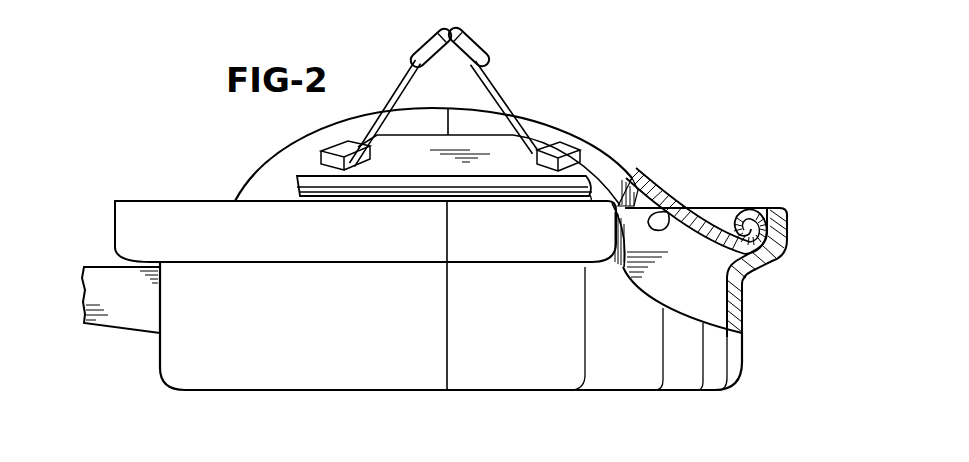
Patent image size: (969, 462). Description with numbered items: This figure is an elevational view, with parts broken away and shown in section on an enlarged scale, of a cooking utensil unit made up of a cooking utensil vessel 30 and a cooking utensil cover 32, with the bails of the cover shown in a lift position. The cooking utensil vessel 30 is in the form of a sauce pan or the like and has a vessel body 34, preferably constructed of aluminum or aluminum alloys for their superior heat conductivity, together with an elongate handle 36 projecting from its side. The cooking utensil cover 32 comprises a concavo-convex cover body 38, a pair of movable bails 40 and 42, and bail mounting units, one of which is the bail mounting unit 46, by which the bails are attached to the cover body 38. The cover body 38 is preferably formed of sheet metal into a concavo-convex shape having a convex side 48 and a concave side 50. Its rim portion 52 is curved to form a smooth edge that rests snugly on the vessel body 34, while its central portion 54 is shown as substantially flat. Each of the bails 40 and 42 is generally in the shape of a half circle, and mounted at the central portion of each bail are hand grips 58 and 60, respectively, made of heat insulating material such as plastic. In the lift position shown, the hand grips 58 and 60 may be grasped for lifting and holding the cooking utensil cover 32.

The cooking utensil vessel 30 is at (156, 357).
The cooking utensil cover 32 is at (252, 180).
The vessel body 34 is at (741, 300).
The elongate handle 36 is at (103, 272).
The cover body 38 is at (298, 142).
The bail 40 is at (403, 86).
The bail 42 is at (492, 82).
The bail mounting unit 46 is at (519, 154).
The convex side 48 is at (641, 177).
The concave side 50 is at (677, 207).
The rim portion 52 is at (753, 208).
The central portion 54 is at (461, 108).
The hand grip 58 is at (425, 42).
The hand grip 60 is at (468, 35).